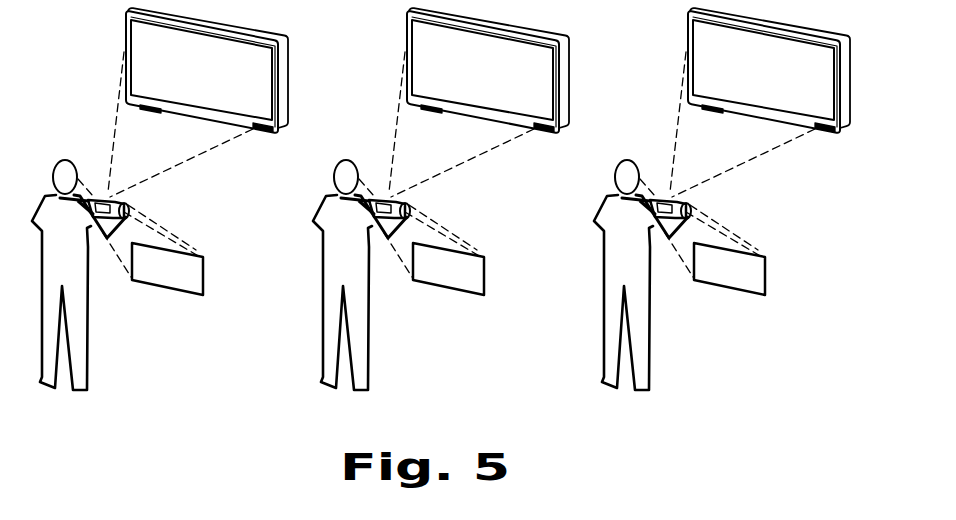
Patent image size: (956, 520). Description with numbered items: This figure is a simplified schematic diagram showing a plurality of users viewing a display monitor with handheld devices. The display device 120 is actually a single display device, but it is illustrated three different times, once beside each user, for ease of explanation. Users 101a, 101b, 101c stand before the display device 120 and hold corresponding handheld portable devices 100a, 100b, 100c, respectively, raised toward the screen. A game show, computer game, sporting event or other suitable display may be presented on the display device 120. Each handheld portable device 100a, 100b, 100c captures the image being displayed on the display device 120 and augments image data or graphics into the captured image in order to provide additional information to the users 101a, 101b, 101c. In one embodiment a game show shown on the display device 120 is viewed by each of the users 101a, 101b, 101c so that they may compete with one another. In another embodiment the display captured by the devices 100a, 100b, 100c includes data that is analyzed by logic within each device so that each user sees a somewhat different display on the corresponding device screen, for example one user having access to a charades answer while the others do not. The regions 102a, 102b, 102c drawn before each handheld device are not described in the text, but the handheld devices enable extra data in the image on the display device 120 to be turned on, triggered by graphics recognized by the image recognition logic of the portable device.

The display device 120 is at (267, 39).
The handheld portable device 100a is at (128, 203).
The user 101a is at (88, 372).
The virtual image region (user a) 102a is at (205, 268).
The handheld portable device 100b is at (425, 202).
The user 101b is at (377, 276).
The virtual image region (user b) 102b is at (483, 269).
The handheld portable device 100c is at (706, 202).
The user 101c is at (658, 276).
The virtual image region (user c) 102c is at (764, 269).